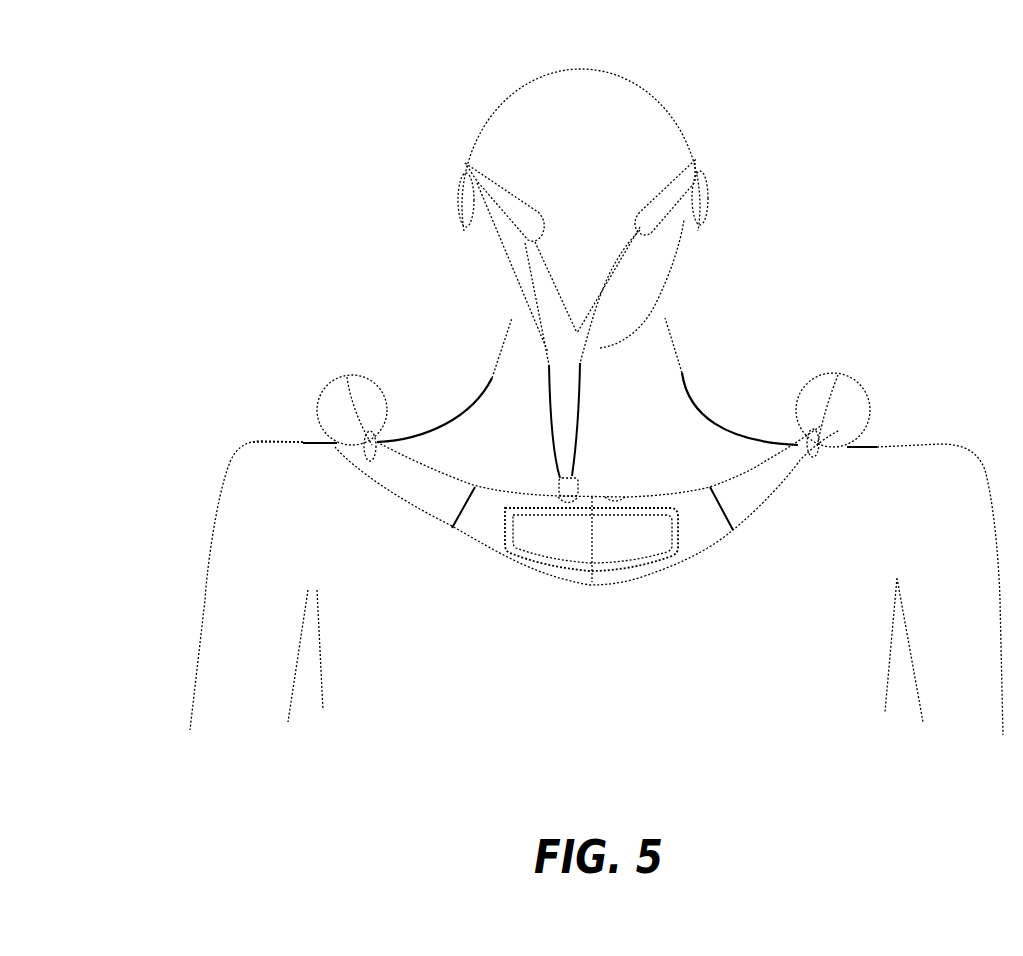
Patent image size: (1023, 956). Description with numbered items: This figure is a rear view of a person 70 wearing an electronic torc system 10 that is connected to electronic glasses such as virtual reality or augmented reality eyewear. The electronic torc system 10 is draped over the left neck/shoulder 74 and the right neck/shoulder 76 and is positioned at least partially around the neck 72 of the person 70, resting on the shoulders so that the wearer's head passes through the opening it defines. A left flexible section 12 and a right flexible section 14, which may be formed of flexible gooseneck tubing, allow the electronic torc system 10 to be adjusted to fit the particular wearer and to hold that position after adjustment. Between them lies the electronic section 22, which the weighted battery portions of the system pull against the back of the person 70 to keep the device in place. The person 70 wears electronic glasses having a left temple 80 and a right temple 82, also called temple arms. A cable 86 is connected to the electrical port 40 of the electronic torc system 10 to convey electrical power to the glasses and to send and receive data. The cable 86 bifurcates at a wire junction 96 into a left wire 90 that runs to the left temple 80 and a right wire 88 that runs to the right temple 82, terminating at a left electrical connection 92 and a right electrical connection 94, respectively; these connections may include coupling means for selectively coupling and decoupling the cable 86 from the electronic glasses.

The electronic torc system 10 is at (327, 393).
The left flexible section 12 is at (427, 497).
The right flexible section 14 is at (848, 398).
The electronic section 22 is at (650, 570).
The electrical port 40 is at (578, 483).
The person 70 is at (517, 94).
The neck 72 is at (482, 393).
The left neck/shoulder 74 is at (257, 450).
The right neck/shoulder 76 is at (910, 447).
The left temple 80 is at (468, 160).
The right temple 82 is at (690, 160).
The cable 86 is at (577, 410).
The right wire 88 is at (642, 248).
The left wire 90 is at (543, 290).
The left electrical connection 92 is at (527, 243).
The right electrical connection 94 is at (643, 233).
The wire junction 96 is at (576, 298).